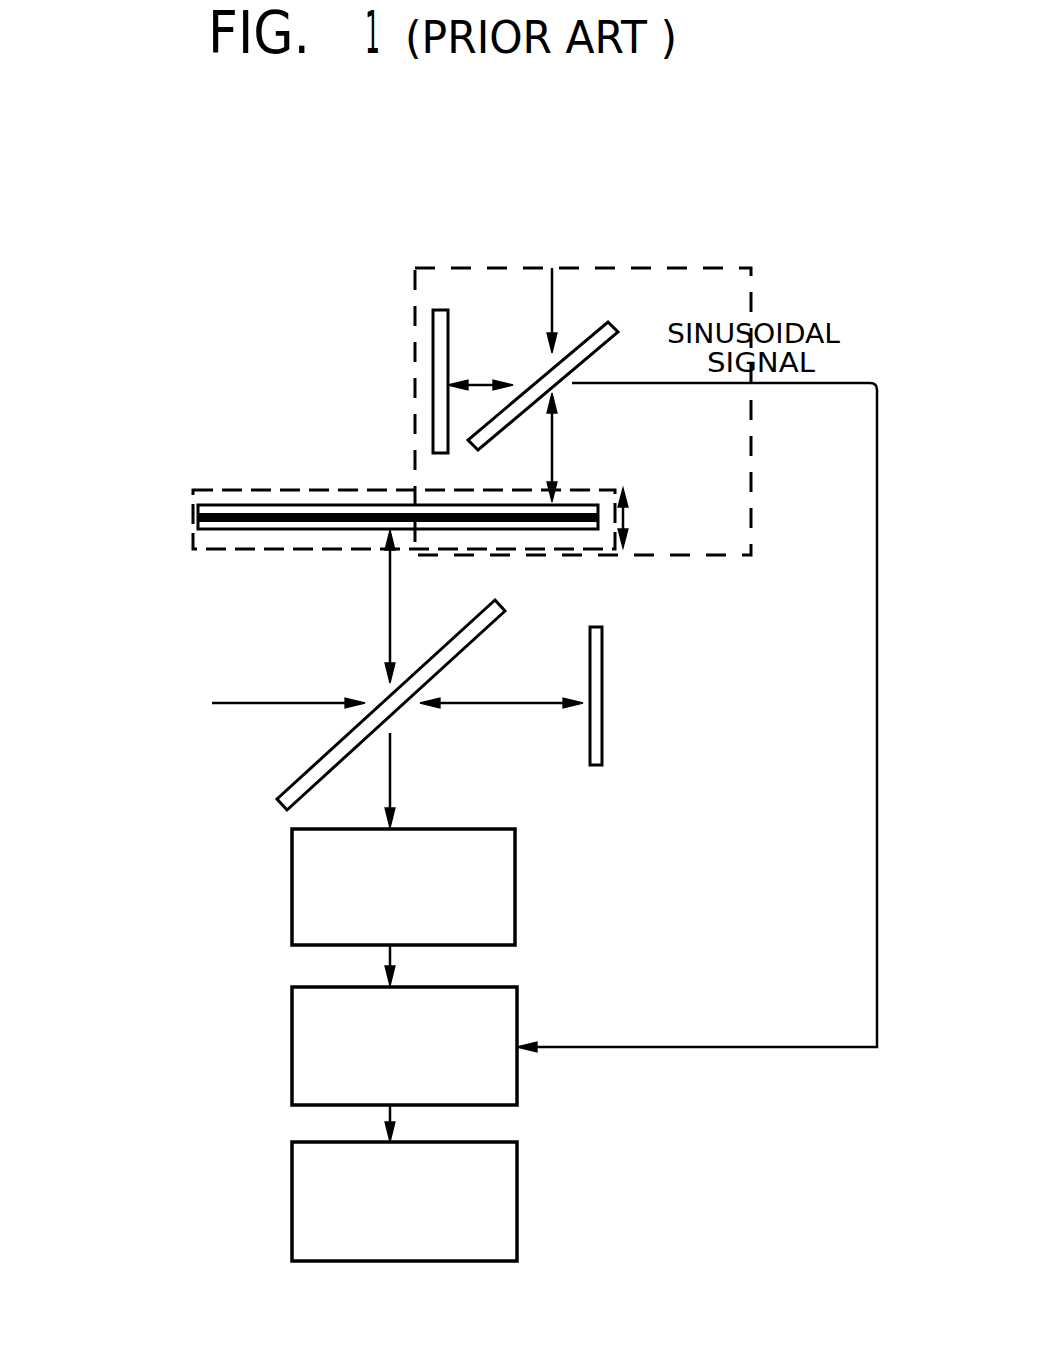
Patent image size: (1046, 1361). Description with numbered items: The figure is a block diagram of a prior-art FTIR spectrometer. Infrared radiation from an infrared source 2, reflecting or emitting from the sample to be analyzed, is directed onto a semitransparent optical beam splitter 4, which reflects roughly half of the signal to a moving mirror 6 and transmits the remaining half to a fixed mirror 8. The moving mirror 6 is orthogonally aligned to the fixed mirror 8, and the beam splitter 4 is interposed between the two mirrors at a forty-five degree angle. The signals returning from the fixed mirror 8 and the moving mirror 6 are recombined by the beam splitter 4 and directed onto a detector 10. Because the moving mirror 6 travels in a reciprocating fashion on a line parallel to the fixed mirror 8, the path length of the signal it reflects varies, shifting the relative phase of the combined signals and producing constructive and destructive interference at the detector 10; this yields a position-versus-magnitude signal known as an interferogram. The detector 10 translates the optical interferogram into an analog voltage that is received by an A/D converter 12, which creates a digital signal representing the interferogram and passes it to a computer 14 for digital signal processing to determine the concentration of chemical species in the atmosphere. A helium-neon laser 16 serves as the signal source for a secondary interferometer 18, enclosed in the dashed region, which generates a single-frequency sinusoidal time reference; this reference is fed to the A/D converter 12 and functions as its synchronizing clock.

The infrared source 2 is at (107, 656).
The beam splitter 4 is at (505, 605).
The moving mirror 6 is at (198, 513).
The fixed mirror 8 is at (602, 653).
The detector 10 is at (517, 879).
The A/D converter 12 is at (517, 1005).
The computer 14 is at (517, 1199).
The HE-NE laser 16 is at (580, 224).
The secondary interferometer 18 is at (706, 260).